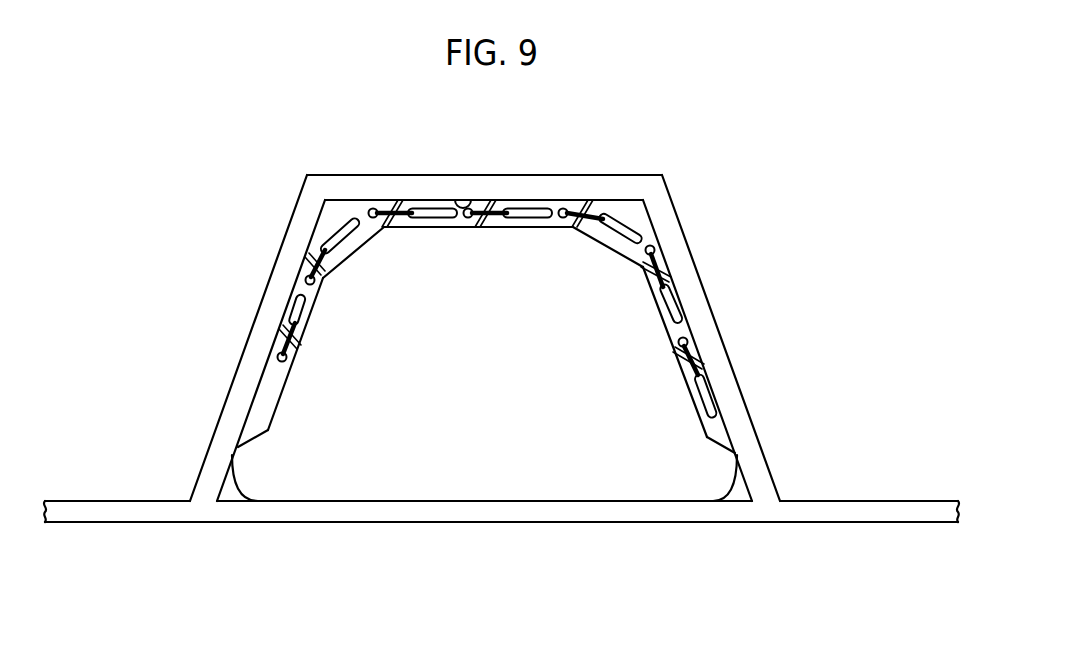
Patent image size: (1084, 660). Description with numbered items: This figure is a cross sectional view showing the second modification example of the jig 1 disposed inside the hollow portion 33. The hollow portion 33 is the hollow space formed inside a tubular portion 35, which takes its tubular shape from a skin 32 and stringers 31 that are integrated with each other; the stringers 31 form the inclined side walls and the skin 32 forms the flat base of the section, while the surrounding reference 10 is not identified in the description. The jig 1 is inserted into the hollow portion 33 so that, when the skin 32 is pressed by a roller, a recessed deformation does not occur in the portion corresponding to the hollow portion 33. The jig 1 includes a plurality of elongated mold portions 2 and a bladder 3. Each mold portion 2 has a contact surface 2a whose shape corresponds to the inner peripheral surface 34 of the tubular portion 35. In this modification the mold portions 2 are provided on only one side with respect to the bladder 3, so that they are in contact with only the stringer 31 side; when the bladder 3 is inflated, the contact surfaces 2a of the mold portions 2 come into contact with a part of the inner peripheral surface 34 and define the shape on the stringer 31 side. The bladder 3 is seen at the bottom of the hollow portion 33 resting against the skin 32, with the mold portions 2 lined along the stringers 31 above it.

The jig 1 is at (509, 281).
The mold portion 2 is at (332, 217).
The contact surface 2a is at (363, 199).
The bladder 3 is at (737, 501).
The panel 10 is at (489, 470).
The stringer 31 is at (687, 277).
The skin 32 is at (862, 505).
The hollow portion 33 is at (707, 407).
The inner peripheral surface 34 is at (462, 199).
The tubular portion 35 is at (516, 190).